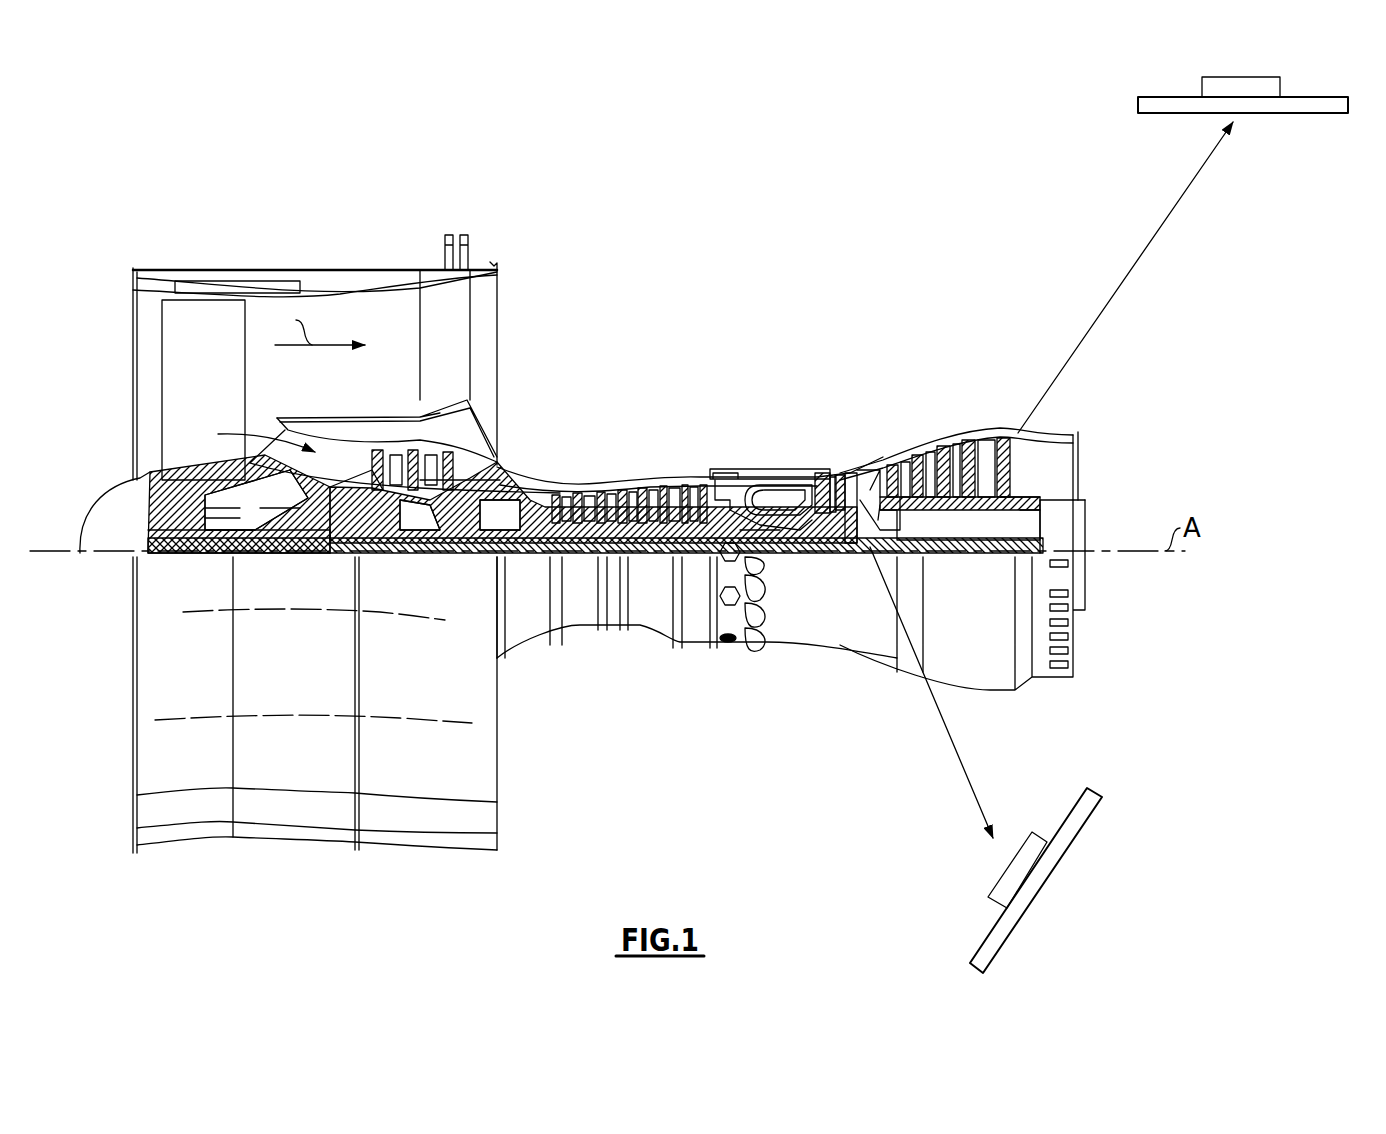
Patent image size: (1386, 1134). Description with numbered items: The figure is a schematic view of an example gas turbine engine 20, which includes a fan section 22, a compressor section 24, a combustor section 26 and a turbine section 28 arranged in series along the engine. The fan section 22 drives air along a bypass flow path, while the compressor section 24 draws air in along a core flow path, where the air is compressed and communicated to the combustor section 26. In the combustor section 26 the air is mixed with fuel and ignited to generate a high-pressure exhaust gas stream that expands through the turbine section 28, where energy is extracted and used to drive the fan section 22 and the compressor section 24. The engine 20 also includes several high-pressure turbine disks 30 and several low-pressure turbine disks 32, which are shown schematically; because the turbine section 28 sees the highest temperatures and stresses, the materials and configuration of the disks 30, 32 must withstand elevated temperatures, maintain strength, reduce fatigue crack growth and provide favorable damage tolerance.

The gas turbine engine 20 is at (776, 320).
The fan section 22 is at (340, 248).
The compressor section 24 is at (755, 393).
The combustor section 26 is at (853, 393).
The turbine section 28 is at (1037, 393).
The high-pressure turbine disks 30 is at (1072, 830).
The low-pressure turbine disks 32 is at (1328, 107).